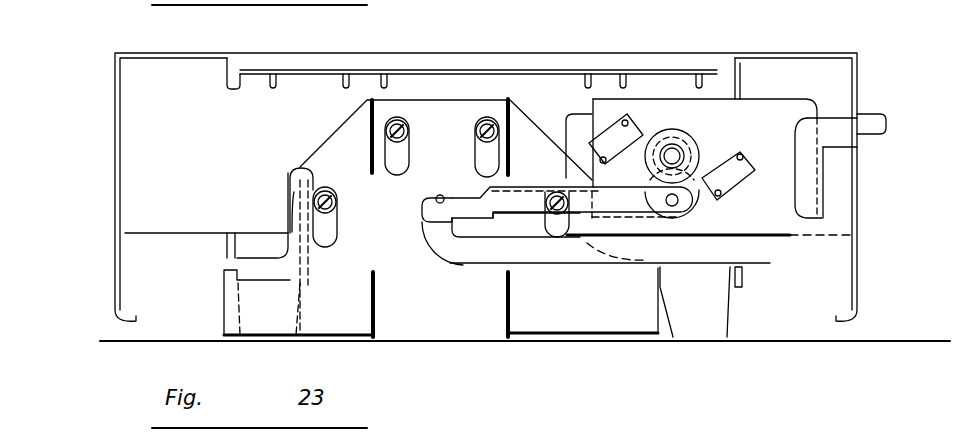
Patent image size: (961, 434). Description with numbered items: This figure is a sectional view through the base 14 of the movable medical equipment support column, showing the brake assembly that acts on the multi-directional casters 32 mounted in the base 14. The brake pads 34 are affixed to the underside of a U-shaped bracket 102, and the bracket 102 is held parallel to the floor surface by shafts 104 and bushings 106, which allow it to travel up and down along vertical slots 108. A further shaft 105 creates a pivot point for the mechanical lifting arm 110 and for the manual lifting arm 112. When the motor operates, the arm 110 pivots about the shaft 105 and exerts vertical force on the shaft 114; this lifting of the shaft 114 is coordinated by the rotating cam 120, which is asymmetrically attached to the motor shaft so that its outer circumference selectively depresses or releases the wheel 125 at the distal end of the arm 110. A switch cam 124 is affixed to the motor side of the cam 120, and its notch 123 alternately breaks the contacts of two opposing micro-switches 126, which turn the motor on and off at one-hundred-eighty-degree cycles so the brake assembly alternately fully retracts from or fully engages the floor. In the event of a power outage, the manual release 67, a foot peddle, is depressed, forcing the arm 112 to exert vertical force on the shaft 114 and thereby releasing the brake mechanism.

The base 14 is at (858, 212).
The multi-directional casters 32 is at (267, 303).
The brake pad 34 is at (366, 343).
The manual release 67 is at (887, 108).
The U-shaped bracket 102 is at (327, 143).
The shafts 104 is at (390, 124).
The shaft 105 is at (557, 210).
The bushings 106 is at (337, 200).
The vertical slots 108 is at (372, 155).
The mechanical lifting arm 110 is at (473, 217).
The manual lifting arm 112 is at (470, 263).
The shaft 114 is at (440, 196).
The cam 120 is at (692, 128).
The notch 123 is at (660, 140).
The switch cam 124 is at (708, 150).
The wheel 125 is at (717, 200).
The micro-switches 126 is at (606, 112).